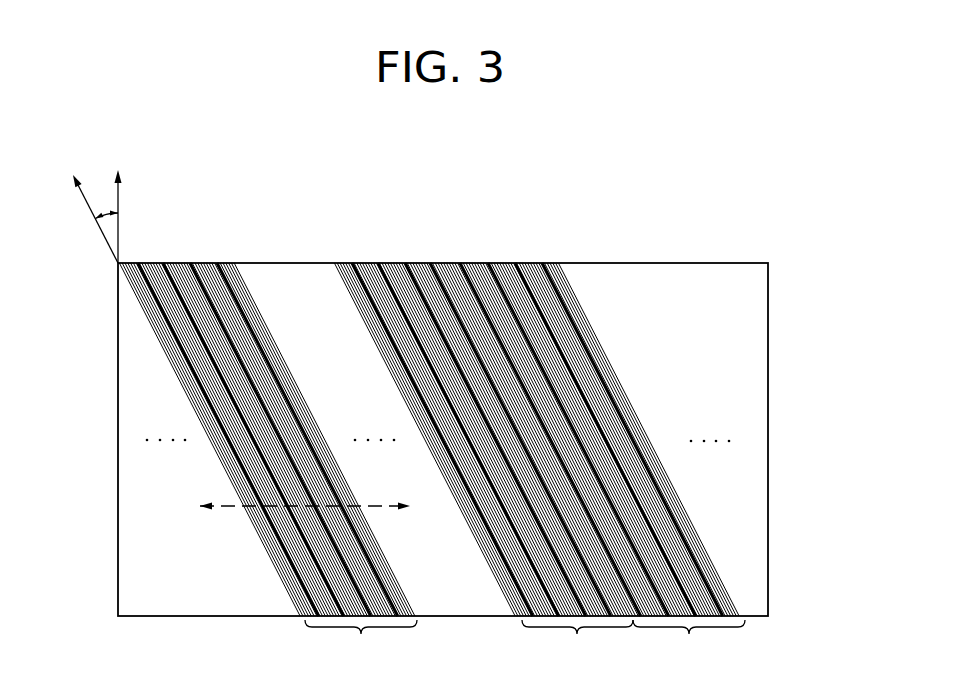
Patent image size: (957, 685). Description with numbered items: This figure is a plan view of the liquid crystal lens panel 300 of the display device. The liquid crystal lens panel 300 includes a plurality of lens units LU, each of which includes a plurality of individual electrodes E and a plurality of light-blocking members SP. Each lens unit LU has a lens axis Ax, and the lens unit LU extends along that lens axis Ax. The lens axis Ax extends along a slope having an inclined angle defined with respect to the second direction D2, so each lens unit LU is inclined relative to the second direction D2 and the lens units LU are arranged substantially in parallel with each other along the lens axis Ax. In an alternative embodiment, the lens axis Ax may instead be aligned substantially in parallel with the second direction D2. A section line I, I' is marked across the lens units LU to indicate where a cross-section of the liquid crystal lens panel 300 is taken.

The liquid crystal lens panel 300 is at (506, 212).
The light-blocking member SP is at (225, 277).
The individual electrode E is at (253, 303).
The lens unit LU is at (525, 640).
The second direction D2 is at (119, 202).
The lens axis Ax is at (85, 206).
The section line I is at (298, 506).
The section line I' is at (420, 506).